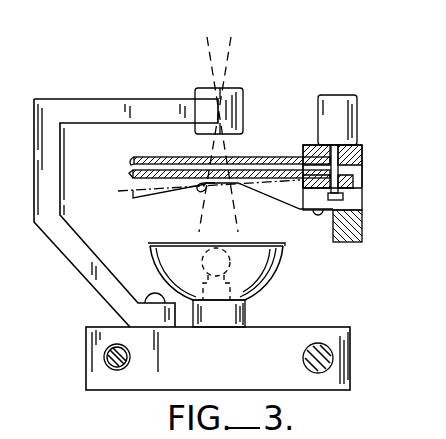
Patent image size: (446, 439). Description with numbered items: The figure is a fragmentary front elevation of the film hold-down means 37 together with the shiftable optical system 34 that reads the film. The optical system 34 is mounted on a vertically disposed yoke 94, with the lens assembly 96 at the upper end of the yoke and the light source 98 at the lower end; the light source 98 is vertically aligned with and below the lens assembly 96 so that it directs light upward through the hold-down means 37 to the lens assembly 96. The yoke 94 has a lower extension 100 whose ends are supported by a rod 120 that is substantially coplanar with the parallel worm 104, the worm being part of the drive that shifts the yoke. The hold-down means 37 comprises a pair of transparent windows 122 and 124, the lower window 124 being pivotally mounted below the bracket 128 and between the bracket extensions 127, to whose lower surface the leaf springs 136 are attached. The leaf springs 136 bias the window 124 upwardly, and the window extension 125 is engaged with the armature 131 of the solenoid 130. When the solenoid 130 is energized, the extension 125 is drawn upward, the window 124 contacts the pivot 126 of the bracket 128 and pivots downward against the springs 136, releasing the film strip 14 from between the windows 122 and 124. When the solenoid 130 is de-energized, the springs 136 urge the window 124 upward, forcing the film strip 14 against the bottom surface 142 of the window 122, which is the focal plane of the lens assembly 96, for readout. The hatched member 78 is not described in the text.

The film strip 14 is at (254, 157).
The optical system 34 is at (246, 61).
The film hold-down means 37 is at (366, 87).
The mounting block 78 is at (363, 226).
The yoke 94 is at (76, 268).
The lens assembly 96 is at (245, 107).
The light source 98 is at (284, 275).
The lower extension 100 is at (352, 344).
The worm 104 is at (106, 356).
The rod 120 is at (321, 343).
The transparent window 122 is at (172, 157).
The transparent window 124 is at (134, 191).
The window extension 125 is at (354, 180).
The pivot 126 is at (324, 164).
The bracket extensions 127 is at (311, 200).
The bracket 128 is at (344, 148).
The solenoid 130 is at (357, 110).
The armature 131 is at (345, 197).
The leaf springs 136 is at (212, 190).
The bottom surface 142 is at (134, 162).